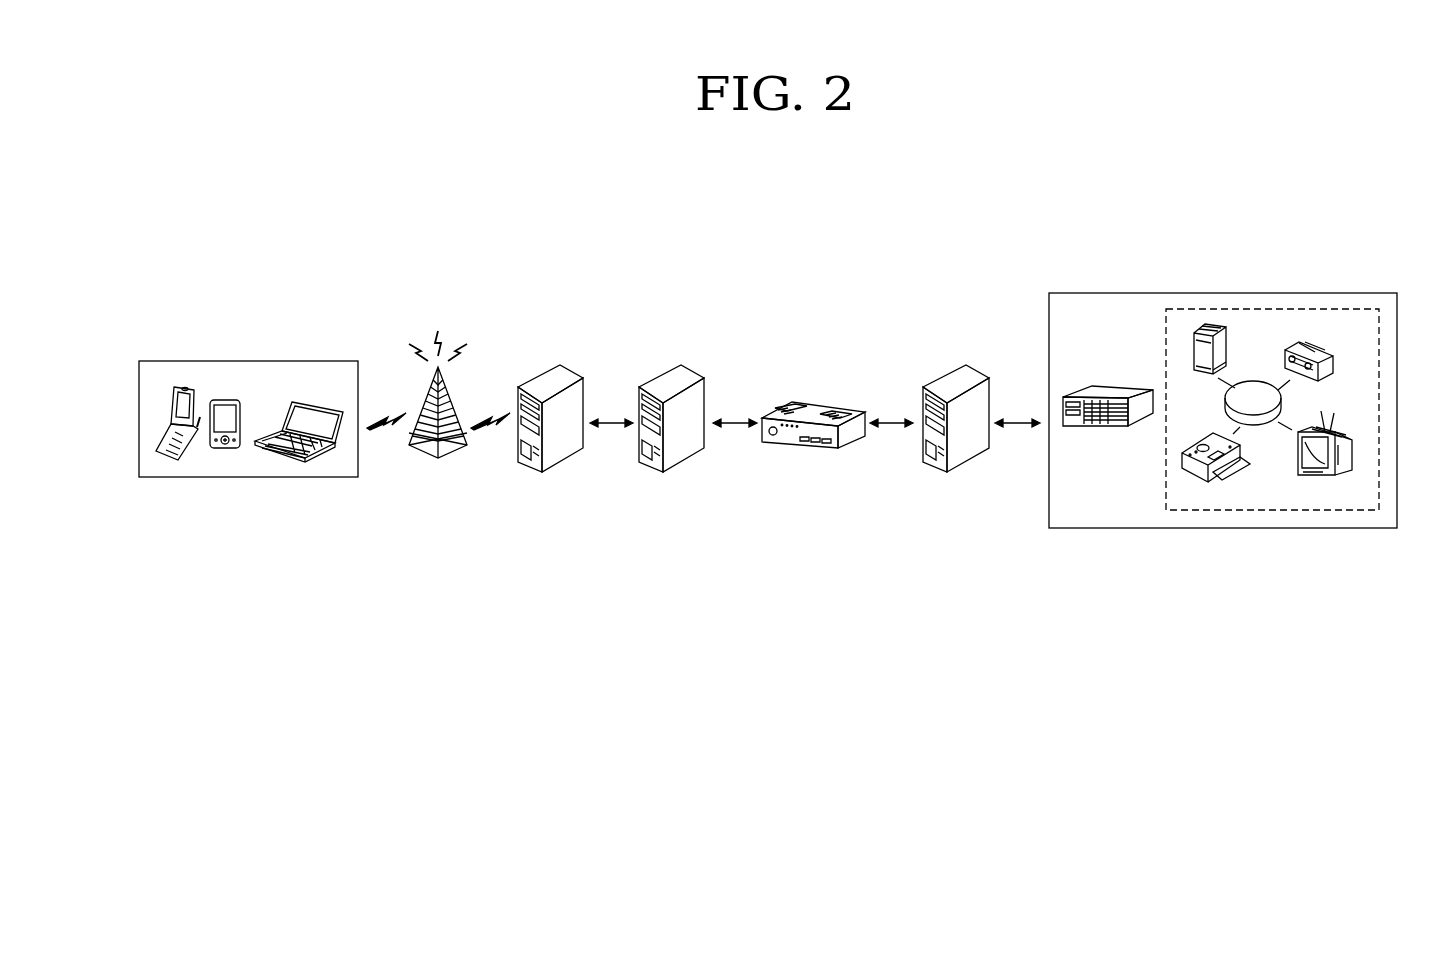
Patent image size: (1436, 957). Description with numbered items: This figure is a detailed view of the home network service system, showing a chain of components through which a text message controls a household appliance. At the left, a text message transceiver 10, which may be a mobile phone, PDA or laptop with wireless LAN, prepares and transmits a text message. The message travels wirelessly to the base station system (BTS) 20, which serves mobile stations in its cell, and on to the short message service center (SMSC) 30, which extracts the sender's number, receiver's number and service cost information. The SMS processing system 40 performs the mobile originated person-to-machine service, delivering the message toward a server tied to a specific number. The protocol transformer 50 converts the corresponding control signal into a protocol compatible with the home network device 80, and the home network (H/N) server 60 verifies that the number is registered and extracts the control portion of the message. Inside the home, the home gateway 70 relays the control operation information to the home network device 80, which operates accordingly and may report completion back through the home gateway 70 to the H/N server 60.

The text message transceiver 10 is at (248, 360).
The base station system (BTS) 20 is at (438, 325).
The short message service center (SMSC) 30 is at (560, 365).
The SMS processing system 40 is at (681, 364).
The protocol transformer 50 is at (823, 402).
The home network (H/N) server 60 is at (966, 365).
The home gateway 70 is at (1110, 397).
The home network device 80 is at (1271, 309).